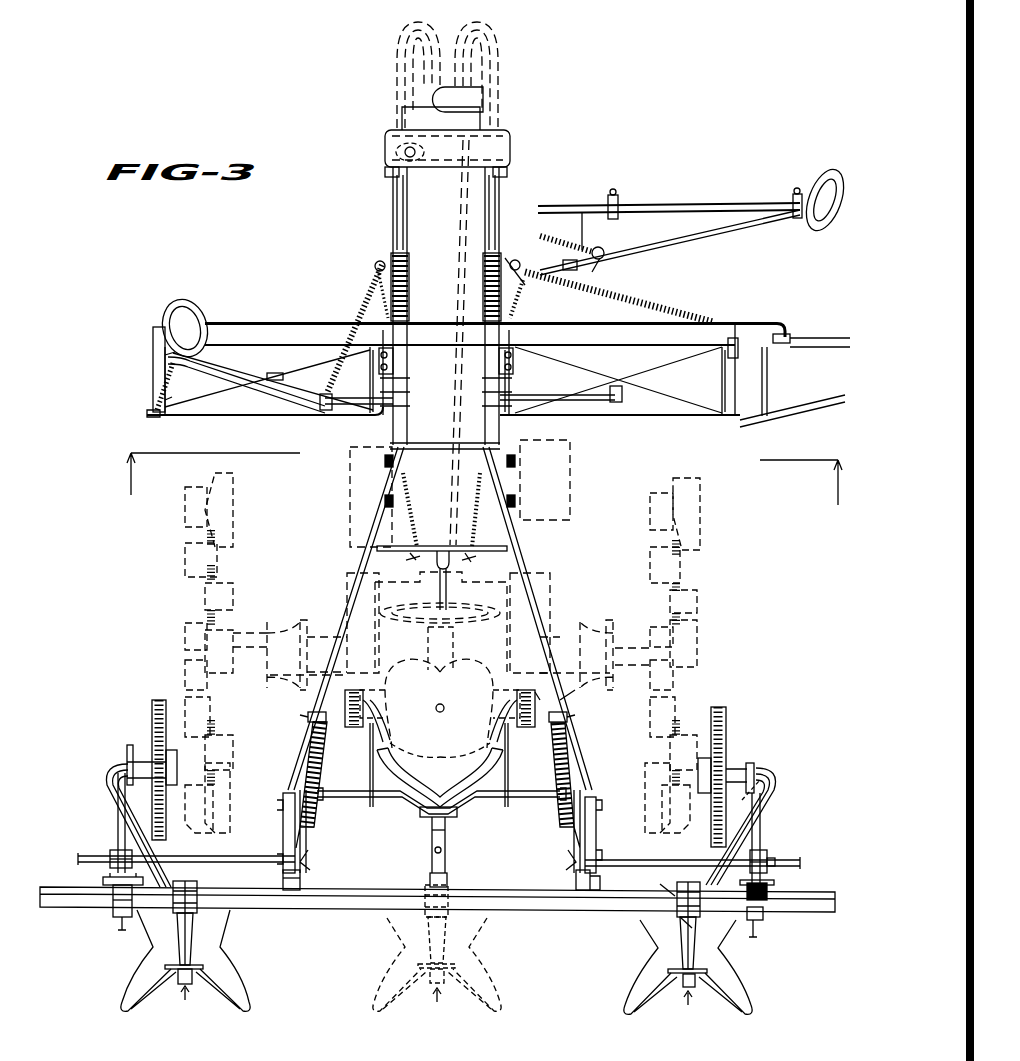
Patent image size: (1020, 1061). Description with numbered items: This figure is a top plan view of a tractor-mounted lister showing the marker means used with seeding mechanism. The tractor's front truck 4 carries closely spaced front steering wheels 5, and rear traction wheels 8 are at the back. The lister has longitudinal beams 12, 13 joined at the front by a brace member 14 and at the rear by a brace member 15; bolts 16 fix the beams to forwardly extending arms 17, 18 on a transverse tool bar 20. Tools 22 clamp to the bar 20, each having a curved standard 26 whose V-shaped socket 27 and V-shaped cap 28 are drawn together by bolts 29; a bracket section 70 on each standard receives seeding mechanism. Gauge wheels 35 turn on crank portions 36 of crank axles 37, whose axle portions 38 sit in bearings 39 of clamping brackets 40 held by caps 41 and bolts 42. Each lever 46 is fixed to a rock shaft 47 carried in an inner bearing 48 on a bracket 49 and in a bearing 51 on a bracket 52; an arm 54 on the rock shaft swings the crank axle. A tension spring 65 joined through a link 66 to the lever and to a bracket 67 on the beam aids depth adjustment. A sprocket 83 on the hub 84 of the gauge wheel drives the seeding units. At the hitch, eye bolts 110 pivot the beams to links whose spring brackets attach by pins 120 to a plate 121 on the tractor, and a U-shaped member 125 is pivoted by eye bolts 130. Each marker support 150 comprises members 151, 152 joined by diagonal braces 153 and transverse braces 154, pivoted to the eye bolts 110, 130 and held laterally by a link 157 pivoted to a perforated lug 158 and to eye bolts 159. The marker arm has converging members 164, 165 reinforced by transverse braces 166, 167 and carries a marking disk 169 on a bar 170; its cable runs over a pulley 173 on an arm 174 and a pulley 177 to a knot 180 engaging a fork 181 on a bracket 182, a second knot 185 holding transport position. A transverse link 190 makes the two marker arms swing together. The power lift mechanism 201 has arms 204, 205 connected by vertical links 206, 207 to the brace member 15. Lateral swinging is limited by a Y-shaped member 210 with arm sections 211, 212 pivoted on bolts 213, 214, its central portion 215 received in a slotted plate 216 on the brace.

The front truck 4 is at (484, 479).
The front steering wheels 5 is at (466, 38).
The traction wheels 8 is at (692, 545).
The longitudinally extending beam 12 is at (350, 606).
The longitudinally extending beam 13 is at (533, 610).
The brace member 14 is at (445, 433).
The brace member 15 is at (441, 804).
The bolts 16 is at (595, 808).
The forwardly extending arm 17 is at (282, 818).
The forwardly extending arm 18 is at (597, 820).
The transverse tool bar 20 is at (536, 912).
The tools 22 is at (436, 967).
The standard 26 is at (682, 940).
The V-shaped socket 27 is at (700, 905).
The V-shaped cap 28 is at (659, 881).
The bolts 29 is at (680, 922).
The gauge wheels 35 is at (726, 718).
The crank portions 36 is at (772, 785).
The crank axles 37 is at (762, 818).
The axle portions 38 is at (776, 890).
The bearings 39 is at (772, 882).
The clamping brackets 40 is at (767, 905).
The caps 41 is at (118, 912).
The bolts 42 is at (120, 930).
The lever 46 is at (556, 748).
The rock shaft 47 is at (638, 860).
The laterally inner bearing 48 is at (300, 878).
The bracket 49 is at (604, 880).
The bearing 51 is at (777, 860).
The bracket 52 is at (766, 856).
The arm 54 is at (741, 805).
The tension spring 65 is at (322, 770).
The link 66 is at (438, 831).
The brackets 67 is at (560, 716).
The bracket section 70 is at (668, 972).
The sprocket 83 is at (753, 764).
The hub 84 is at (733, 768).
The eye bolts 110 is at (375, 432).
The bolts or pins 120 is at (465, 178).
The plate 121 is at (494, 162).
The U-shaped member 125 is at (432, 360).
The eye bolts 130 is at (456, 369).
The marker support 150 is at (578, 418).
The member 151 is at (690, 428).
The member 152 is at (666, 350).
The diagonal braces 153 is at (706, 385).
The transverse braces 154 is at (548, 381).
The link 157 is at (457, 386).
The perforated lug 158 is at (626, 398).
The eye bolts 159 is at (402, 388).
The member 164 is at (805, 345).
The member 165 is at (805, 404).
The transverse brace 166 is at (764, 372).
The transverse brace 167 is at (584, 240).
The marking disk 169 is at (814, 190).
The bar 170 is at (654, 206).
The pulley 173 is at (600, 250).
The arm 174 is at (785, 330).
The pulley 177 is at (528, 262).
The knot 180 is at (522, 560).
The fork 181 is at (495, 548).
The bracket 182 is at (428, 547).
The second knot 185 is at (477, 490).
The transverse link 190 is at (555, 326).
The power lift mechanism 201 is at (505, 690).
The arm 204 is at (371, 772).
The arm 205 is at (509, 778).
The vertical link 206 is at (438, 808).
The vertical link 207 is at (461, 812).
The Y-shaped member 210 is at (418, 782).
The arm section 211 is at (400, 750).
The arm section 212 is at (486, 750).
The bolt 213 is at (422, 707).
The bolt 214 is at (470, 707).
The central portion 215 is at (432, 840).
The slotted plate 216 is at (455, 840).